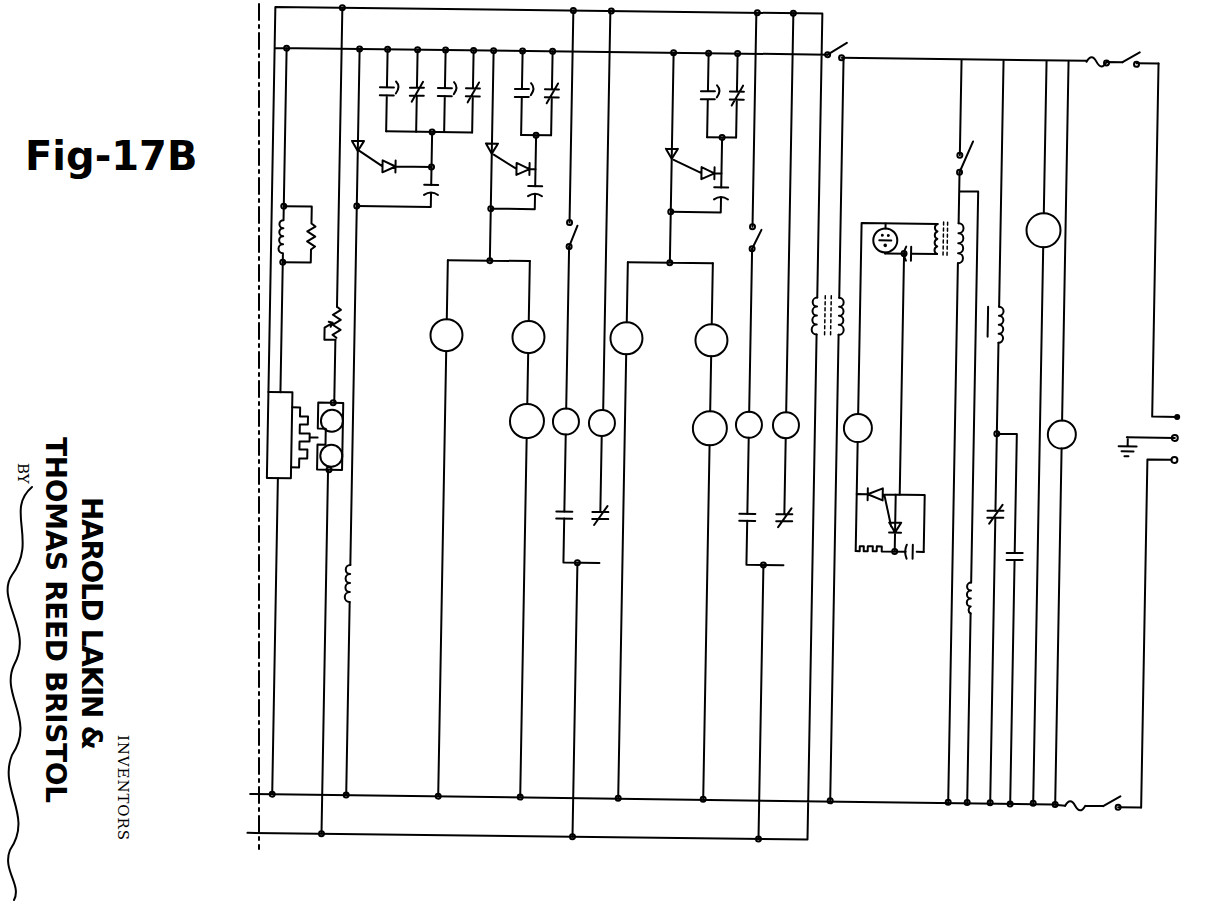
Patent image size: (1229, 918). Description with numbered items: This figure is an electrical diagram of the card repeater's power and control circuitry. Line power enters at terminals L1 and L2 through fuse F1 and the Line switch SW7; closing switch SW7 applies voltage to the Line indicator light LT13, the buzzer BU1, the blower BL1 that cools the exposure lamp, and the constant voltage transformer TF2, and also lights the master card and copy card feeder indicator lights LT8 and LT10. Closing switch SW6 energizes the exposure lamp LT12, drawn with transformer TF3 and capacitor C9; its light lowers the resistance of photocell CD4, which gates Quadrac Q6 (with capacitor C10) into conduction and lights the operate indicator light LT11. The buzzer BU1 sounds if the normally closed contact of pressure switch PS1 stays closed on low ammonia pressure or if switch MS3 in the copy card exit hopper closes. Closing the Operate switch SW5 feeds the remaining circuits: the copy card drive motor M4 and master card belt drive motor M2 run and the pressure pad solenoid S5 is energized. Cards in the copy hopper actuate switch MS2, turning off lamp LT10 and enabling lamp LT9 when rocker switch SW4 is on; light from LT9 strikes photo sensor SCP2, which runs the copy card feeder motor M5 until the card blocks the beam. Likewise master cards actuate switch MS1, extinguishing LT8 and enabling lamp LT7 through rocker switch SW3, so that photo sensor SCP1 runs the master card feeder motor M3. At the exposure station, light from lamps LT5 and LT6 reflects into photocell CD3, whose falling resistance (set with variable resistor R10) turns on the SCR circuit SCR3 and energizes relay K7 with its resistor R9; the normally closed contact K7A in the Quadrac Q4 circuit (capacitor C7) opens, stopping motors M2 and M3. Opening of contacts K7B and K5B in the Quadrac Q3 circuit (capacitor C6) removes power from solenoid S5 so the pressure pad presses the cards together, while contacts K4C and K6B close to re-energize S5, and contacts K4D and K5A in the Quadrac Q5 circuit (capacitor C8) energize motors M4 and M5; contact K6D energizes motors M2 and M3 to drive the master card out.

The normally open contact of relay K4 K4C is at (398, 90).
The normally closed contact of relay K5 K5B is at (430, 78).
The contact of relay K6 K6B is at (456, 91).
The normally closed contact of relay K7 K7B is at (488, 79).
The contact of relay K6 K6D is at (534, 93).
The normally closed contact of relay K7 K7A is at (556, 80).
The normally open contact of relay K4 K4D is at (699, 95).
The contact of relay K5 K5A is at (731, 95).
The Quadrac Q3 is at (391, 170).
The Quadrac Q4 is at (510, 172).
The Quadrac Q5 is at (693, 177).
The Quadrac Q6 is at (890, 520).
The capacitor C6 is at (440, 186).
The capacitor C7 is at (546, 191).
The capacitor C8 is at (732, 192).
The capacitor C9 is at (910, 266).
The capacitor C10 is at (914, 556).
The master card feeder rocker switch SW3 is at (588, 237).
The copy card feeder rocker switch SW4 is at (739, 239).
The Operate switch SW5 is at (957, 47).
The switch on the developer timer sub-chassis SW6 is at (978, 154).
The Line switch SW7 is at (1129, 434).
The fuse F1 is at (1090, 434).
The relay K7 is at (262, 234).
The resistor R9 is at (309, 234).
The variable resistor R10 is at (319, 319).
The photocell CD3 is at (298, 411).
The photocell CD4 is at (866, 553).
The SCR circuit SCR3 is at (280, 435).
The lamp LT5 is at (343, 420).
The lamp LT6 is at (327, 468).
The master card feeder sensor lamp LT7 is at (567, 409).
The master card feeder indicator light LT8 is at (614, 423).
The copy card feeder sensor lamp LT9 is at (752, 410).
The copy card feeder indicator lamp LT10 is at (788, 410).
The operate indicator light LT11 is at (863, 411).
The exposure lamp LT12 is at (882, 225).
The Line indicator light LT13 is at (1073, 421).
The pressure pad solenoid S5 is at (364, 583).
The master card belt drive motor M2 is at (446, 335).
The master card feeder motor M3 is at (528, 337).
The copy card drive motor M4 is at (626, 338).
The copy card feeder motor M5 is at (711, 340).
The master card feeder photo sensor SCP1 is at (510, 424).
The copy card feeder photo sensor SCP2 is at (695, 430).
The master card feeder switch MS1 is at (582, 504).
The copy card feeder switch MS2 is at (766, 506).
The copy card exit hopper switch MS3 is at (1028, 552).
The constant voltage transformer TF2 is at (836, 294).
The transformer TF3 is at (944, 222).
The blower BL1 is at (1046, 222).
The buzzer BU1 is at (1003, 322).
The pressure switch PS1 is at (982, 505).
The line terminal L1 is at (1172, 242).
The line terminal L2 is at (1164, 632).